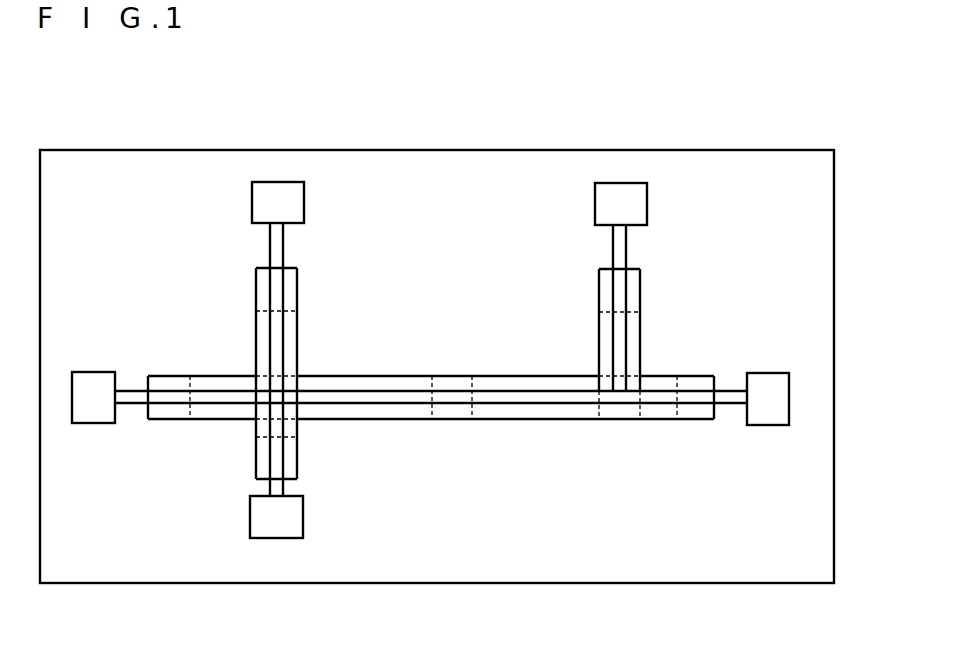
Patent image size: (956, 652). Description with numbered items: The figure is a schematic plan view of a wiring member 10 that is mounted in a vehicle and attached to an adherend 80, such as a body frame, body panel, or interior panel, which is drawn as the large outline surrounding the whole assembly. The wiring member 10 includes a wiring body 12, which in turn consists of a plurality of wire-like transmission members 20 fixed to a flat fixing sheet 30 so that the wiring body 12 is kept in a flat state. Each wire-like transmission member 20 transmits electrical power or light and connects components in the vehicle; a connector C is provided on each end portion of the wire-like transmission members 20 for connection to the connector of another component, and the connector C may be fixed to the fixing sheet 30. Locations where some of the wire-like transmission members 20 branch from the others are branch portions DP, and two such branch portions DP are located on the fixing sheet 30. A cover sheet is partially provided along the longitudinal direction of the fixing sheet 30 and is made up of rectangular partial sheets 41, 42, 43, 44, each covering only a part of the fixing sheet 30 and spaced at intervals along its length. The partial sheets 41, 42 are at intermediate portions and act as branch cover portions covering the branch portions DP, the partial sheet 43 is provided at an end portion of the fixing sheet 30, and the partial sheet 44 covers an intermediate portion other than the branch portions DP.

The adherend 80 is at (494, 150).
The wiring member 10 is at (166, 250).
The wiring body 12 is at (515, 354).
The fixing sheet 30 is at (497, 377).
The wire-like transmission member 20 is at (540, 391).
The partial sheet 41 is at (298, 365).
The partial sheet 42 is at (600, 415).
The partial sheet 43 is at (290, 312).
The partial sheet 44 is at (394, 387).
The branch portion DP is at (266, 393).
The connector C is at (305, 205).